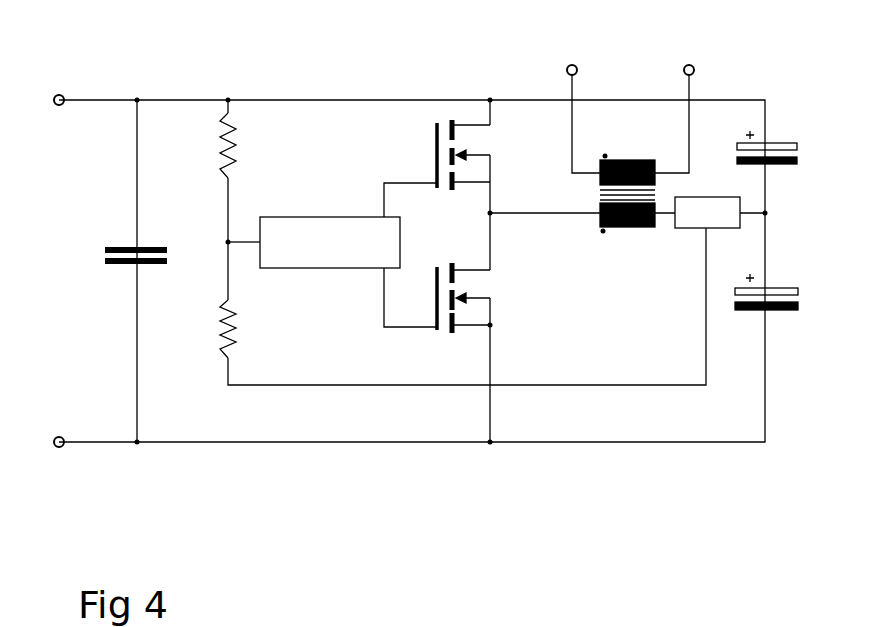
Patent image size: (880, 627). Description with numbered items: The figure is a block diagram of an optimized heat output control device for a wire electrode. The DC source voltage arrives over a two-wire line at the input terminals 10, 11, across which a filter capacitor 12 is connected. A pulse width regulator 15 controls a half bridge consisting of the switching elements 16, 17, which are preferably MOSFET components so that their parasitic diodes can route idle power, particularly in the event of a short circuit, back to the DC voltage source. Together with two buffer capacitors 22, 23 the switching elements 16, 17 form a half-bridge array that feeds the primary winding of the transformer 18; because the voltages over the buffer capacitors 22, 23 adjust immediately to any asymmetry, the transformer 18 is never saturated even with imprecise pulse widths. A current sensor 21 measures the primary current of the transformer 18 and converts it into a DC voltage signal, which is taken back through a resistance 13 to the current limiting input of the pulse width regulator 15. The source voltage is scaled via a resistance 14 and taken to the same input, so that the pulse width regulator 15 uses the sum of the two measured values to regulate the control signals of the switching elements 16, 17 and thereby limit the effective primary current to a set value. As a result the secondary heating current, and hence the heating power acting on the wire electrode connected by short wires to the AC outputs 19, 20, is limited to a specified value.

The input terminal 10 is at (63, 447).
The input terminal 11 is at (63, 95).
The filter capacitor 12 is at (150, 265).
The resistance 13 is at (235, 362).
The resistance 14 is at (215, 117).
The pulse width regulator 15 is at (295, 217).
The switching element 16 is at (450, 333).
The switching element 17 is at (452, 120).
The transformer 18 is at (618, 228).
The AC output 19 is at (566, 66).
The AC output 20 is at (685, 66).
The current sensor 21 is at (692, 228).
The buffer capacitor 22 is at (770, 310).
The buffer capacitor 23 is at (768, 143).